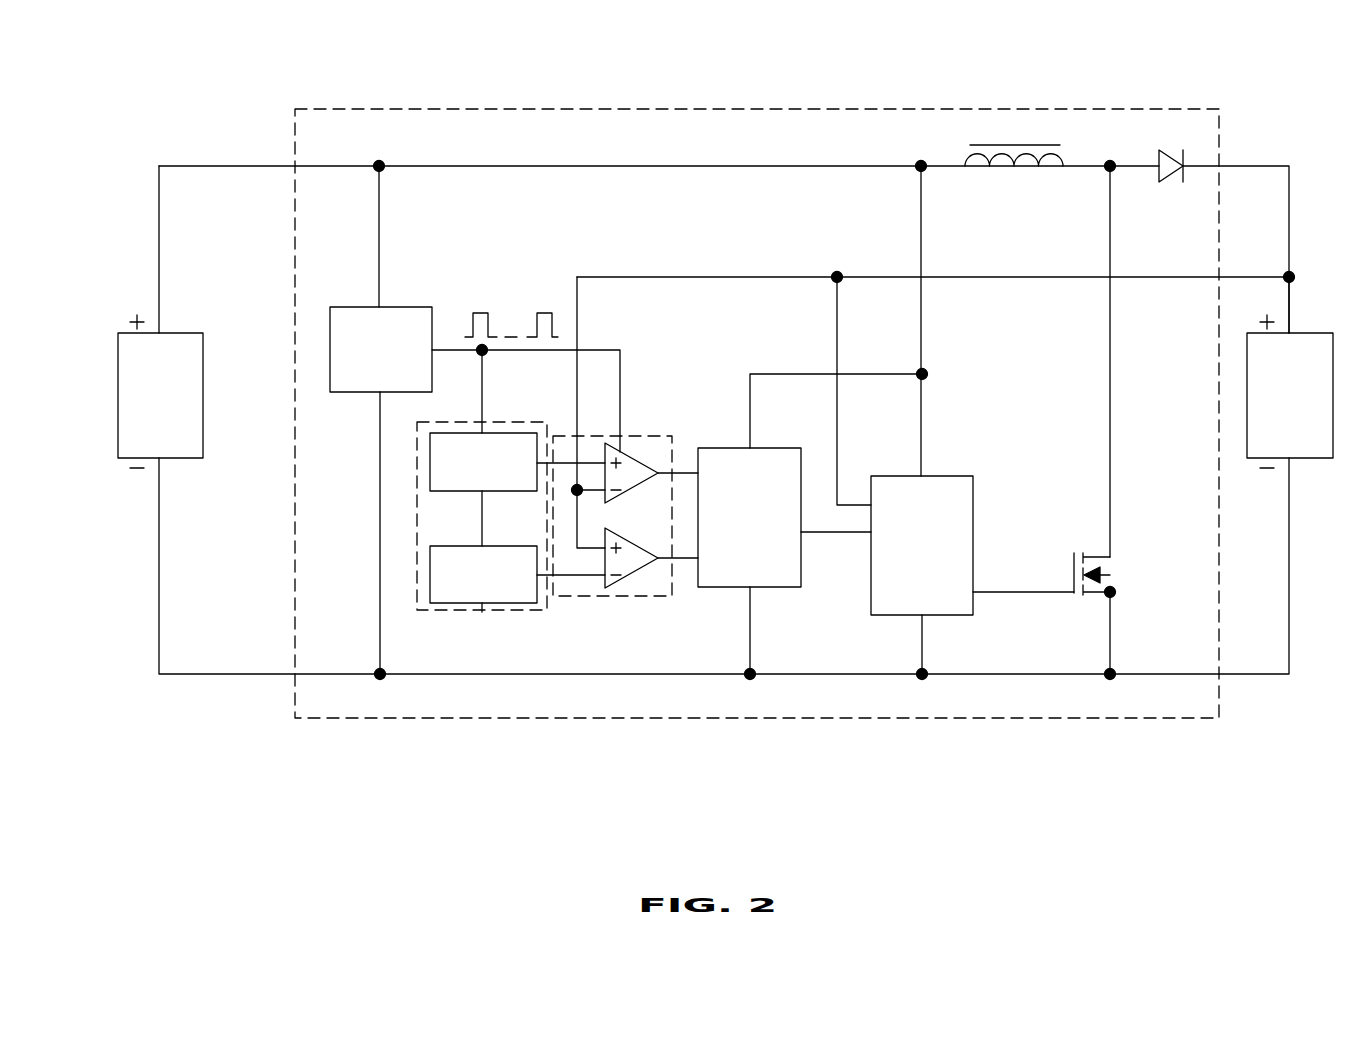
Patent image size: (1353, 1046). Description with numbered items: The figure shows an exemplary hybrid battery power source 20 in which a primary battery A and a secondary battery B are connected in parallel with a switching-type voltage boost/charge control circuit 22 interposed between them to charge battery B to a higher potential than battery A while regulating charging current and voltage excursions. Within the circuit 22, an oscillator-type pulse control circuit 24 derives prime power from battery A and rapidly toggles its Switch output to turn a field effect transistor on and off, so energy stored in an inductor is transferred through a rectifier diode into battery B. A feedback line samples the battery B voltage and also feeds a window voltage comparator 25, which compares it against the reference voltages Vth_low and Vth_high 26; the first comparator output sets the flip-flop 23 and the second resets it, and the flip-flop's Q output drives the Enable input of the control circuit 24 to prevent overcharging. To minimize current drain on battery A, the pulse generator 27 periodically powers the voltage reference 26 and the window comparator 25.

The hybrid battery power source 20 is at (150, 75).
The switching-type voltage boost/charge control circuit 22 is at (383, 108).
The flip-flop 23 is at (735, 587).
The oscillator-type pulse control circuit 24 is at (870, 590).
The window voltage comparator 25 is at (562, 598).
The reference voltages Vth_low and Vth_high 26 is at (482, 612).
The pulse generator 27 is at (363, 392).